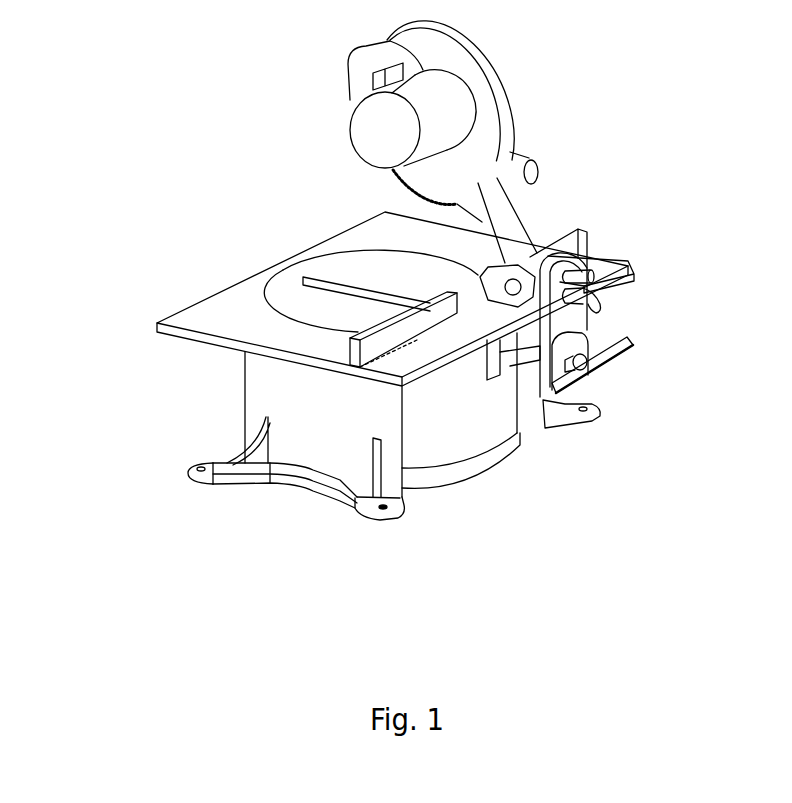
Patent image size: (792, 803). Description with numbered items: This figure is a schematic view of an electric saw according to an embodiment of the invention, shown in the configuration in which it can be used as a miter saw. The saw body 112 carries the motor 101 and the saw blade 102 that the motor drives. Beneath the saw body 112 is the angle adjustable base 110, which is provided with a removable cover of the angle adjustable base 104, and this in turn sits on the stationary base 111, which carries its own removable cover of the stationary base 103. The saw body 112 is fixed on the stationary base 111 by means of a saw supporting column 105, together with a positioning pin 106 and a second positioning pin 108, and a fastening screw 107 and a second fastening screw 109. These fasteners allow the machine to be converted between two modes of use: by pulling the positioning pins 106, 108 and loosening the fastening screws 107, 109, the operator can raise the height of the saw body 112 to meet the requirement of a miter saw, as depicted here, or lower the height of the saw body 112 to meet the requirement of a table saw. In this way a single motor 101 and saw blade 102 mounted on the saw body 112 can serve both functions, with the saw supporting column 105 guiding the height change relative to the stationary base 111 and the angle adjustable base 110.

The motor 101 is at (378, 125).
The saw blade 102 is at (428, 182).
The removable cover of the stationary base 103 is at (218, 313).
The removable cover of the angle adjustable base 104 is at (292, 289).
The saw supporting column 105 is at (557, 313).
The positioning pin 106 is at (590, 268).
The fastening screw 107 is at (603, 296).
The positioning pin 108 is at (592, 352).
The fastening screw 109 is at (580, 367).
The angle adjustable base 110 is at (480, 434).
The stationary base 111 is at (405, 511).
The saw body 112 is at (513, 118).